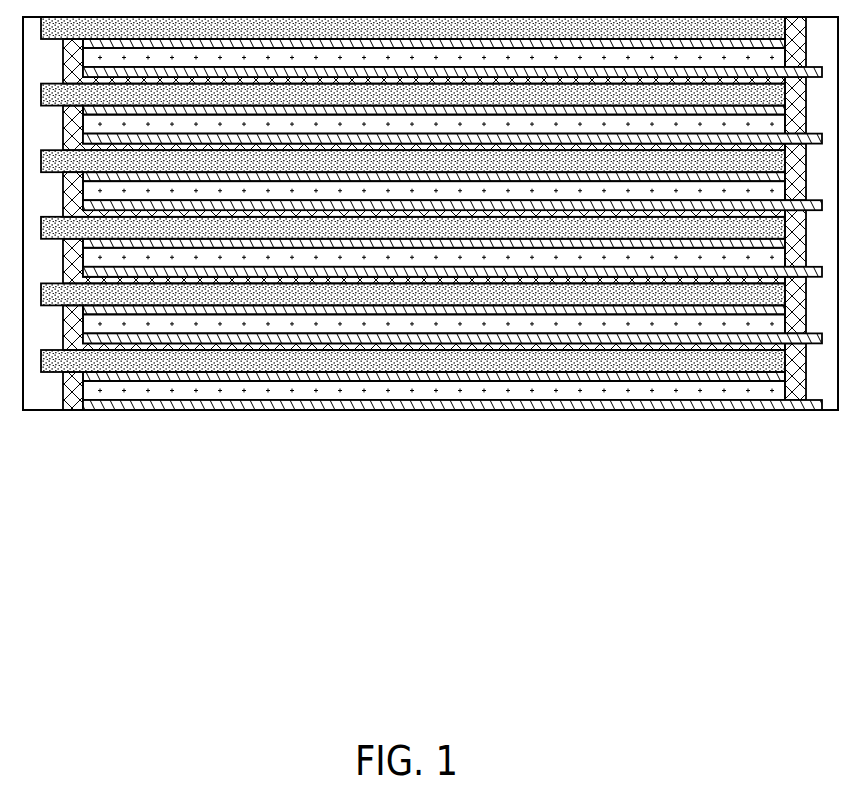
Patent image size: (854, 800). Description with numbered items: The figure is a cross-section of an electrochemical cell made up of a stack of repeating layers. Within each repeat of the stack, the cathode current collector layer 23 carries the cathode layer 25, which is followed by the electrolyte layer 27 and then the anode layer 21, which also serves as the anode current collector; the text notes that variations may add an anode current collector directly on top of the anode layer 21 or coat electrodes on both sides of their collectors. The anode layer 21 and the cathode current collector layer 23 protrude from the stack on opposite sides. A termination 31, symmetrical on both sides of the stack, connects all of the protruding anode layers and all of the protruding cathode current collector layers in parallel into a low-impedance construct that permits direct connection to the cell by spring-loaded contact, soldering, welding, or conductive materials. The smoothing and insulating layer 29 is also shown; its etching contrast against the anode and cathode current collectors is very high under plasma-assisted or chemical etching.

The anode layer 21 is at (52, 373).
The cathode current collector layer 23 is at (265, 410).
The cathode layer 25 is at (353, 402).
The electrolyte layer 27 is at (435, 383).
The smoothing and insulating layer 29 is at (798, 402).
The termination 31 is at (40, 409).